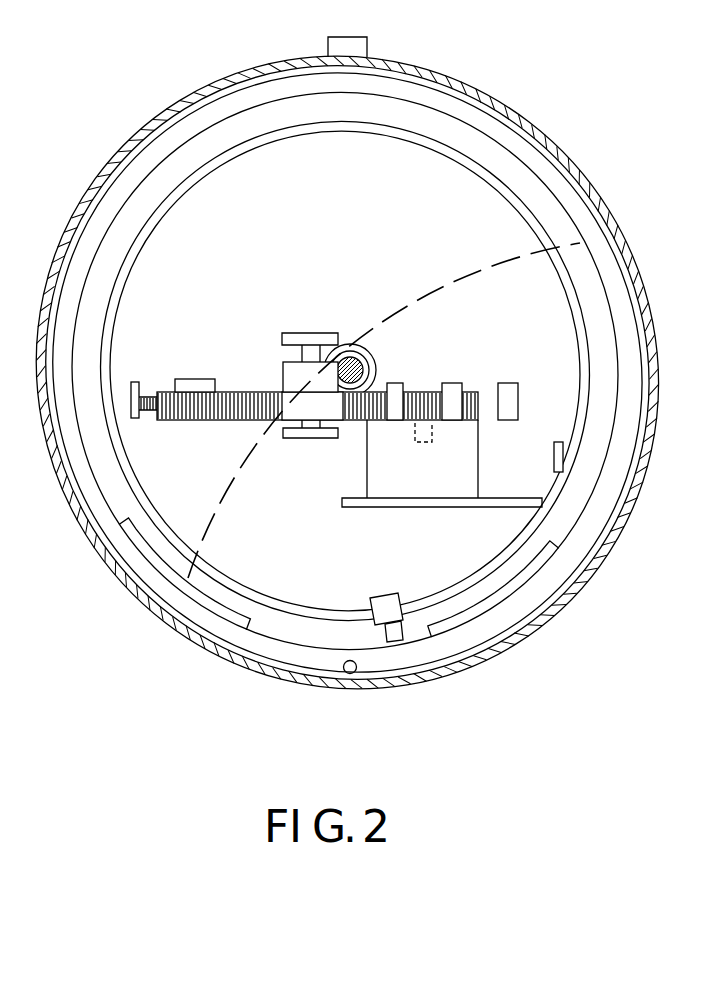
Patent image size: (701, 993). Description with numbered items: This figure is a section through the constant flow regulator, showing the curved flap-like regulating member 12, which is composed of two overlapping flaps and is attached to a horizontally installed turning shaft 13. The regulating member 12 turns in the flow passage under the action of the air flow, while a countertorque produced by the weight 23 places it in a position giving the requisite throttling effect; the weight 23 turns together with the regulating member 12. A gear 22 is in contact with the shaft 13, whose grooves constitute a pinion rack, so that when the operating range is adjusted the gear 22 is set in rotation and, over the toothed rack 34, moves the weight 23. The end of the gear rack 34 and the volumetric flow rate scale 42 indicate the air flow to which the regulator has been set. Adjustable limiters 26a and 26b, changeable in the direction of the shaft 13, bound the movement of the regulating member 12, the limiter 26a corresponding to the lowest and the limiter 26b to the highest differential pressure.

The regulating member 12 is at (453, 290).
The turning shaft 13 is at (353, 356).
The gear 22 is at (290, 426).
The weight 23 is at (472, 465).
The limiter 26a is at (138, 552).
The limiter 26b is at (547, 557).
The toothed rack 34 is at (250, 392).
The volumetric flow rate scale 42 is at (148, 419).